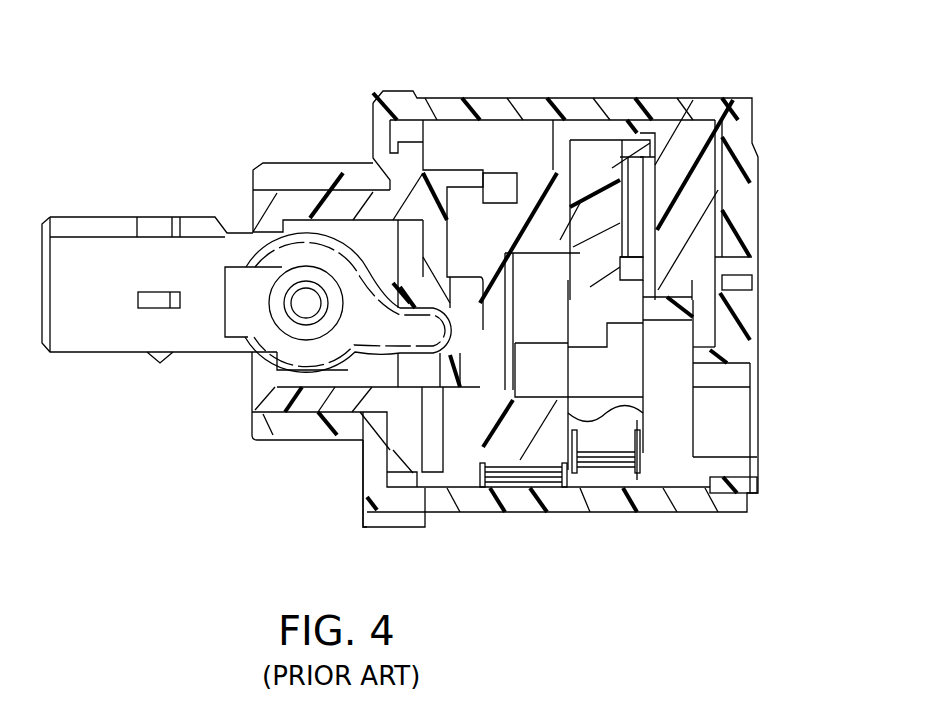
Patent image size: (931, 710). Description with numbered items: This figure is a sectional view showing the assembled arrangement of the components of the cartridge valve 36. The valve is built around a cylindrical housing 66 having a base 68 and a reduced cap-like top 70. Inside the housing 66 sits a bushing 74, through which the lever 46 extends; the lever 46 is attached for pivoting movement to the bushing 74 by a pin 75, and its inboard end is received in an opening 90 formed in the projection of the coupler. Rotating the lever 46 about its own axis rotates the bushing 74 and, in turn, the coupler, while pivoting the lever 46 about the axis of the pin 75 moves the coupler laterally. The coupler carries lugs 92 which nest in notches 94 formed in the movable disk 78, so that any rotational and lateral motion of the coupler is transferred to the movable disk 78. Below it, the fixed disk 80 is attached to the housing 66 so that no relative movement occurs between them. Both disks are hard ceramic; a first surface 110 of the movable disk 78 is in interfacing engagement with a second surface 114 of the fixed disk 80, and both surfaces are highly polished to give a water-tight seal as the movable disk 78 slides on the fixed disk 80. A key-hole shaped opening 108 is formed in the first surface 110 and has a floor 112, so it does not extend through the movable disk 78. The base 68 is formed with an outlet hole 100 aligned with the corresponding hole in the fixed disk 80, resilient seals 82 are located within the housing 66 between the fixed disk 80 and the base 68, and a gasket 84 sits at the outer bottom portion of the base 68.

The cartridge valve 36 is at (145, 165).
The lever 46 is at (98, 342).
The cylindrical housing 66 is at (440, 105).
The base 68 is at (702, 195).
The reduced cap-like top 70 is at (293, 428).
The bushing 74 is at (303, 202).
The pin 75 is at (300, 302).
The movable disk 78 is at (552, 173).
The fixed disk 80 is at (613, 163).
The resilient seals 82 is at (672, 460).
The gasket 84 is at (745, 222).
The opening 90 is at (360, 450).
The lugs 92 is at (497, 180).
The notches 94 is at (513, 180).
The outlet hole 100 is at (720, 436).
The key-hole shaped opening 108 is at (535, 390).
The first surface 110 is at (578, 500).
The floor 112 is at (508, 322).
The second surface 114 is at (557, 390).